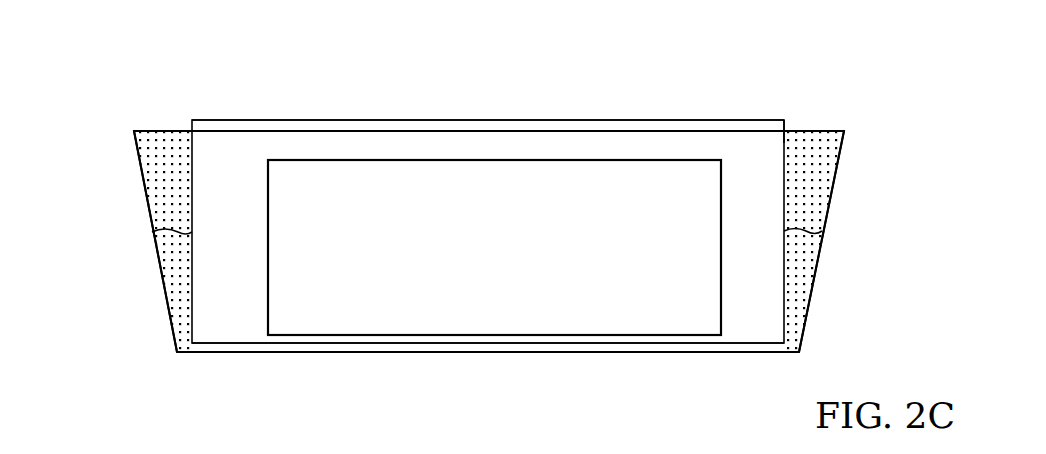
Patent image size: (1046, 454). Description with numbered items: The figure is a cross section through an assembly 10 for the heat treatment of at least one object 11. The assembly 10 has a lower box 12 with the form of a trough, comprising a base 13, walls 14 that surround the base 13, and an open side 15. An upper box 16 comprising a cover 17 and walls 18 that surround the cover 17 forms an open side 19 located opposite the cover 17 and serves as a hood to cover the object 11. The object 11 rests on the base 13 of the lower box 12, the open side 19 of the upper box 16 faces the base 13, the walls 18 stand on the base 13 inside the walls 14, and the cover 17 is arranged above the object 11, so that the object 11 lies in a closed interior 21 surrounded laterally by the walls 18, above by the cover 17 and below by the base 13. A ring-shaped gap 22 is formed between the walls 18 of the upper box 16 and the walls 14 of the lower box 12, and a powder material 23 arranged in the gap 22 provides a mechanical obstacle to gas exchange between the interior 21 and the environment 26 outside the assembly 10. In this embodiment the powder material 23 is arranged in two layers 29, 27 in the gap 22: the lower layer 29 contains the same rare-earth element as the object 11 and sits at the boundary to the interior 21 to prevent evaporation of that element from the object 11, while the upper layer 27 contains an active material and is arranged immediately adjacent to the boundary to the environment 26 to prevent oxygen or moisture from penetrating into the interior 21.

The assembly 10 is at (320, 101).
The object 11 is at (500, 251).
The lower box 12 is at (141, 183).
The base 13 is at (558, 352).
The walls 14 is at (838, 163).
The open side 15 is at (815, 126).
The upper box 16 is at (676, 118).
The cover 17 is at (475, 120).
The walls 18 is at (784, 137).
The open side 19 is at (239, 320).
The interior 21 is at (375, 147).
The gap 22 is at (166, 118).
The powder material 23 is at (157, 147).
The environment 26 is at (608, 71).
The upper layer 27 is at (808, 188).
The lower layer 29 is at (800, 278).